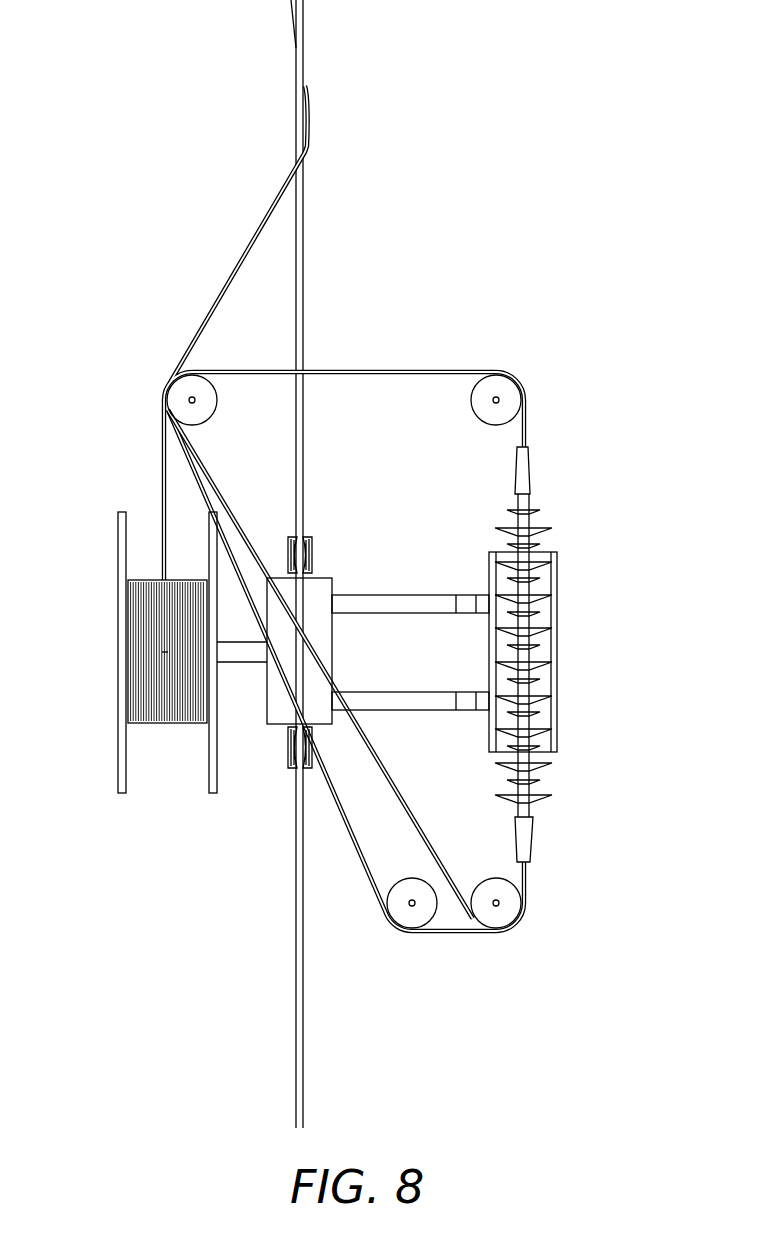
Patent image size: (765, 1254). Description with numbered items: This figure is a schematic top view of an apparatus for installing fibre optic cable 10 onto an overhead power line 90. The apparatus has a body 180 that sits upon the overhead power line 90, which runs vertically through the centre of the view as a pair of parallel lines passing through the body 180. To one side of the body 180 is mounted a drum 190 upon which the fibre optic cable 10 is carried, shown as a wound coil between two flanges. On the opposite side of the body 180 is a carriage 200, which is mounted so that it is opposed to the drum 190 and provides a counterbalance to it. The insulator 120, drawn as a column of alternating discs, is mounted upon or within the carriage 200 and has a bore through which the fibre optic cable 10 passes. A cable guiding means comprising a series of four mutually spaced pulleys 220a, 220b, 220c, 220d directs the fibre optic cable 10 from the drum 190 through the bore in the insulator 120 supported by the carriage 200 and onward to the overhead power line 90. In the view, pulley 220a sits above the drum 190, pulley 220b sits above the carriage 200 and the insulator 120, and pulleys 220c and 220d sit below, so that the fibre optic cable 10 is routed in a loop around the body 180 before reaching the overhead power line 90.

The fibre optic cable 10 is at (219, 278).
The overhead power line 90 is at (315, 290).
The insulator 120 is at (566, 518).
The body 180 is at (271, 737).
The drum 190 is at (108, 746).
The carriage 200 is at (567, 632).
The pulley 220a is at (158, 378).
The pulley 220b is at (527, 370).
The pulley 220c is at (525, 936).
The pulley 220d is at (389, 939).